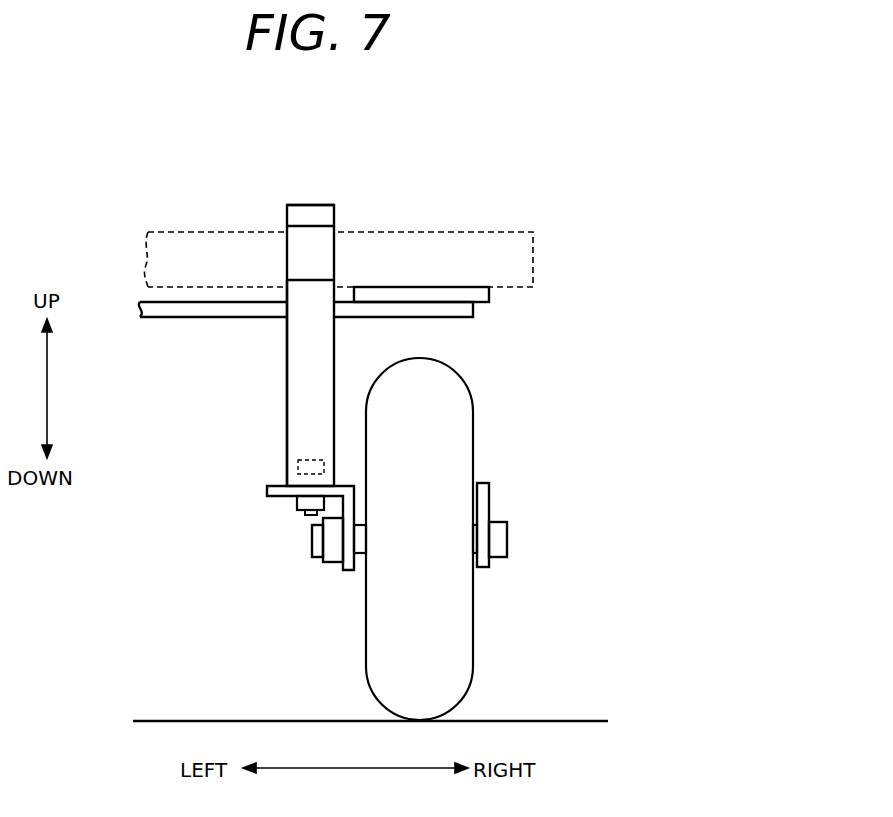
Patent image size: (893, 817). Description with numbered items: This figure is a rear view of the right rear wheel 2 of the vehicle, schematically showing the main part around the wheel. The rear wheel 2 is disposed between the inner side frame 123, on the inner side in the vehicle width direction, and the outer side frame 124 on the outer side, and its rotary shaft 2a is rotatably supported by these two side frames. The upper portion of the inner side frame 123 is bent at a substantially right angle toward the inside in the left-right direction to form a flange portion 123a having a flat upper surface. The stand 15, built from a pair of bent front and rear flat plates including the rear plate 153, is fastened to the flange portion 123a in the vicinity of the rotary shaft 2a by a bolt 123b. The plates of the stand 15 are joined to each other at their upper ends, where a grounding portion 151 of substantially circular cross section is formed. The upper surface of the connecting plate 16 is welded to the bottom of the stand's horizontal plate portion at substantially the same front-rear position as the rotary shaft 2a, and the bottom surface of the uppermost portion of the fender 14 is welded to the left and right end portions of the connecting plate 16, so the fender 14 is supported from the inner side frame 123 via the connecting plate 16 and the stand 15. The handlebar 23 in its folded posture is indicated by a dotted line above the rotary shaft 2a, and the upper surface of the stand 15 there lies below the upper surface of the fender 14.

The rear wheel 2 is at (473, 622).
The rotary shaft 2a is at (510, 537).
The fender 14 is at (478, 287).
The stand 15 is at (280, 440).
The connecting plate 16 is at (182, 317).
The handlebar 23 is at (427, 230).
The inner side frame 123 is at (340, 547).
The flange portion 123a is at (282, 497).
The bolt 123b is at (298, 467).
The outer side frame 124 is at (492, 500).
The grounding portion 151 is at (300, 203).
The rear plate 153 is at (287, 353).